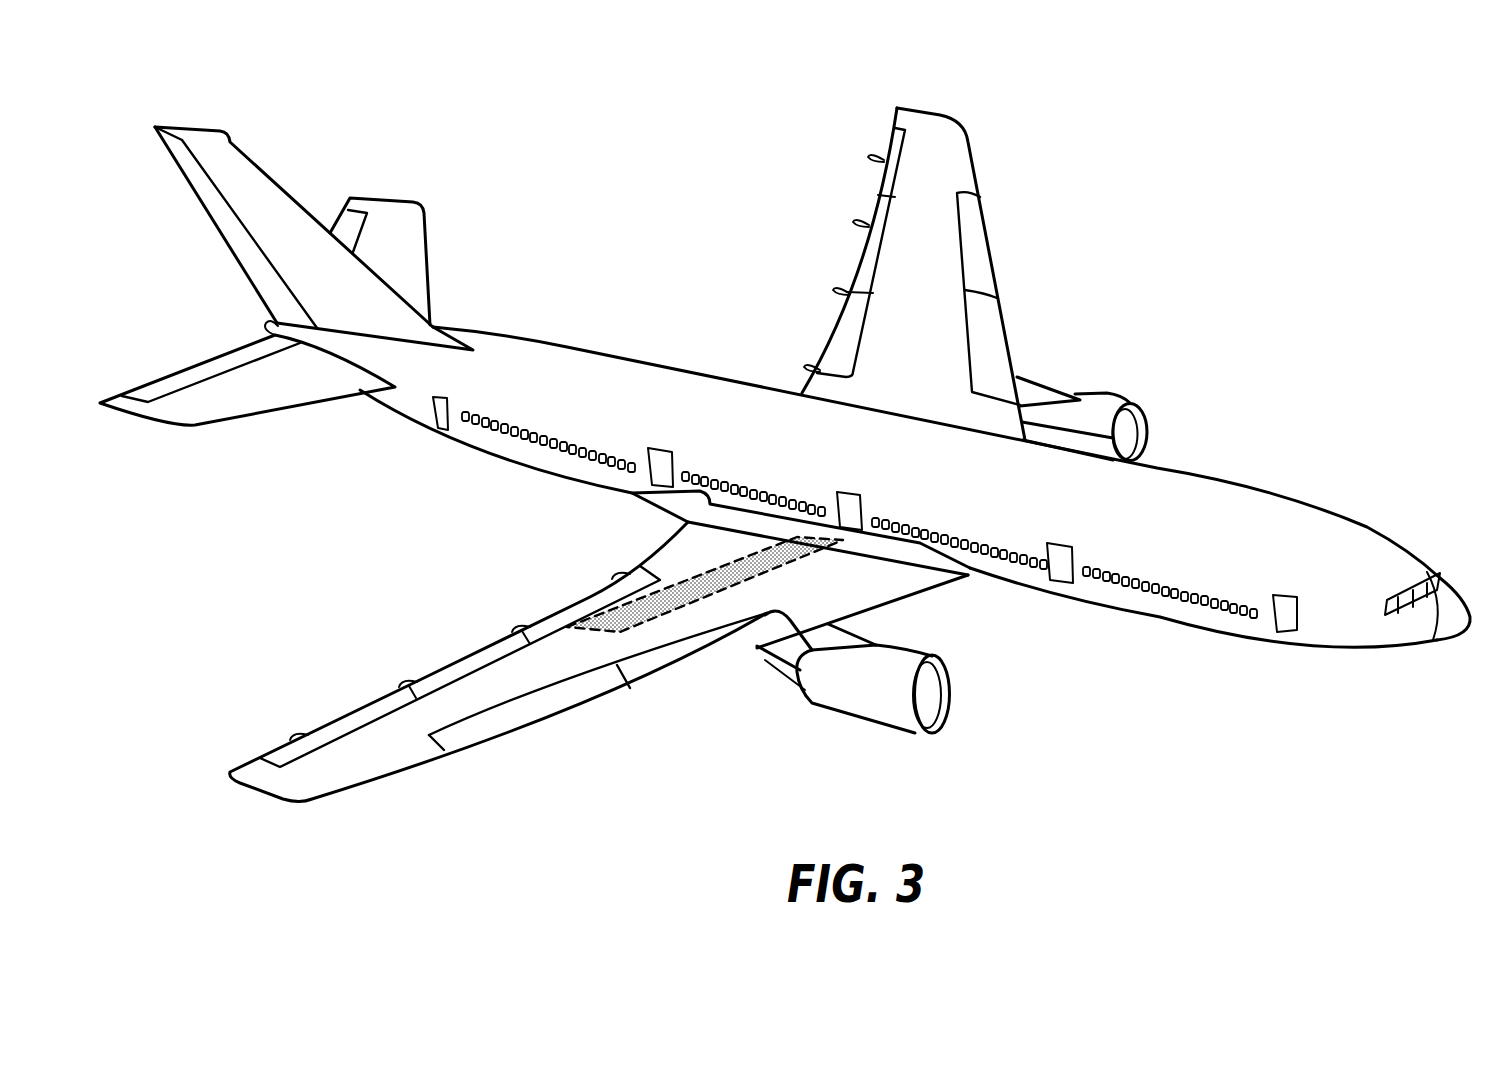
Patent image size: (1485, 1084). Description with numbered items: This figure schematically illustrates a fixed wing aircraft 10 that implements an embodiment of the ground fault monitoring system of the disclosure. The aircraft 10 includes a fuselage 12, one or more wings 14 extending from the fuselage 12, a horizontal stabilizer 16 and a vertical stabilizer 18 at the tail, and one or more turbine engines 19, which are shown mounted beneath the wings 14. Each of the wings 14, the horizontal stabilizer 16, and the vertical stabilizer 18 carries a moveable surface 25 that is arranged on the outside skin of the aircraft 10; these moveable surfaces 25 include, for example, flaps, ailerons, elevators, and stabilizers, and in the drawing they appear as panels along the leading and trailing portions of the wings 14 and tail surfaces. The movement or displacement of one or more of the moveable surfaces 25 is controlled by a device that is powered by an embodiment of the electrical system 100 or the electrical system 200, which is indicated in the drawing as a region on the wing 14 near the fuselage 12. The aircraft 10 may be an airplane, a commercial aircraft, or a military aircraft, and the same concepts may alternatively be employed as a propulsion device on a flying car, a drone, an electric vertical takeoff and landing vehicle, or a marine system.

The fixed wing aircraft 10 is at (1255, 222).
The fuselage 12 is at (597, 350).
The wings 14 is at (367, 783).
The horizontal stabilizer 16 is at (427, 260).
The vertical stabilizer 18 is at (253, 157).
The turbine engines 19 is at (1145, 438).
The moveable surface 25 is at (235, 223).
The electrical system 100 is at (705, 533).
The electrical system 200 is at (705, 580).